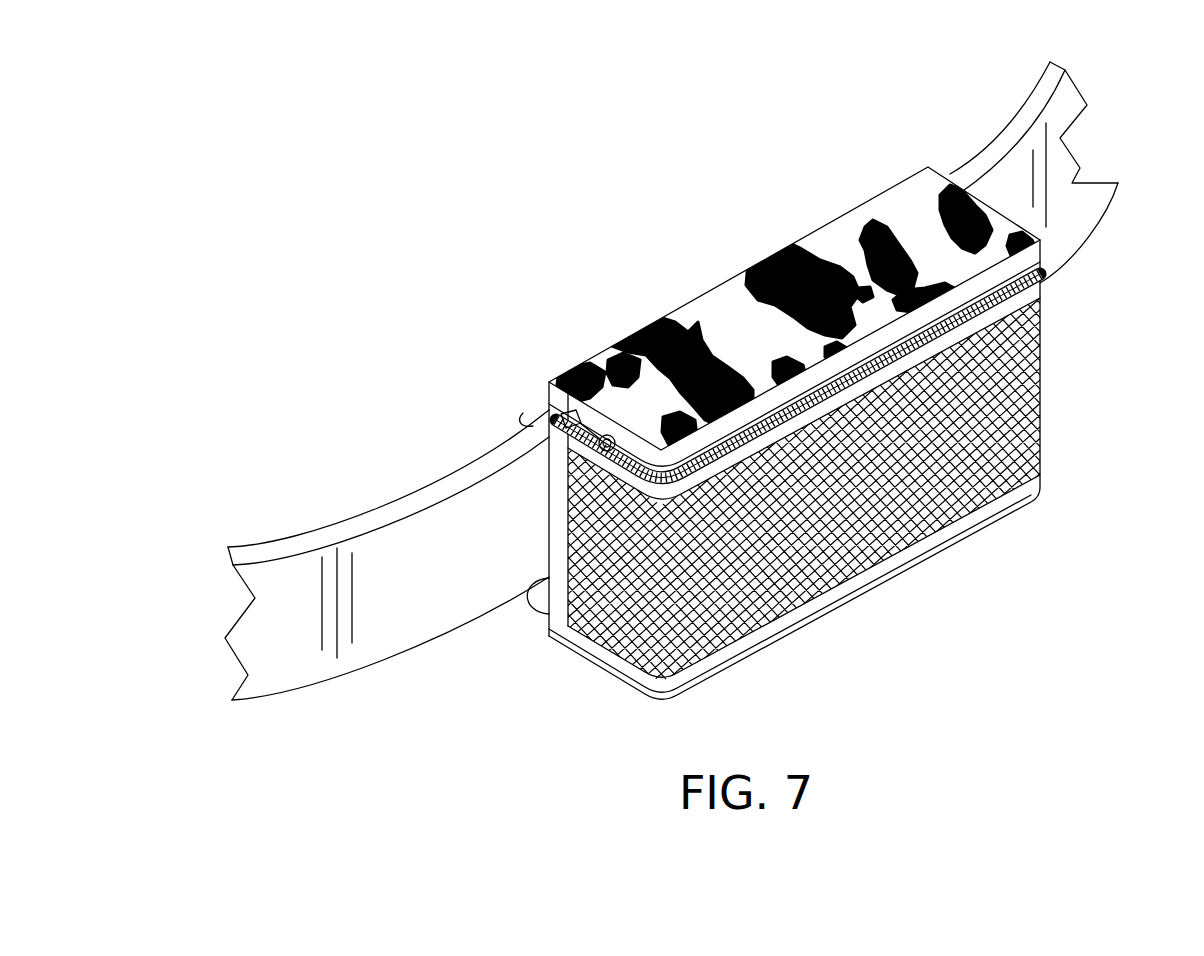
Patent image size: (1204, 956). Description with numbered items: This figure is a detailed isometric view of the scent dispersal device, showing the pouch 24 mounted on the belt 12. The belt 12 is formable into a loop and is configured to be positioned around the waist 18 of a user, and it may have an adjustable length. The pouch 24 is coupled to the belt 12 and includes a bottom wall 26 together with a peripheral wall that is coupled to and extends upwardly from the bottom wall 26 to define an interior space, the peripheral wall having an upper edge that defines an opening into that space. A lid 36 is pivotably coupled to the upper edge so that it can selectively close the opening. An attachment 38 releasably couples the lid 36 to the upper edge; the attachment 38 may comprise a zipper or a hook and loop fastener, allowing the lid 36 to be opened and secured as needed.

The belt 12 is at (358, 527).
The waist 18 is at (1017, 422).
The pouch 24 is at (540, 422).
The bottom wall 26 is at (660, 696).
The lid 36 is at (885, 210).
The attachment 38 is at (1012, 282).